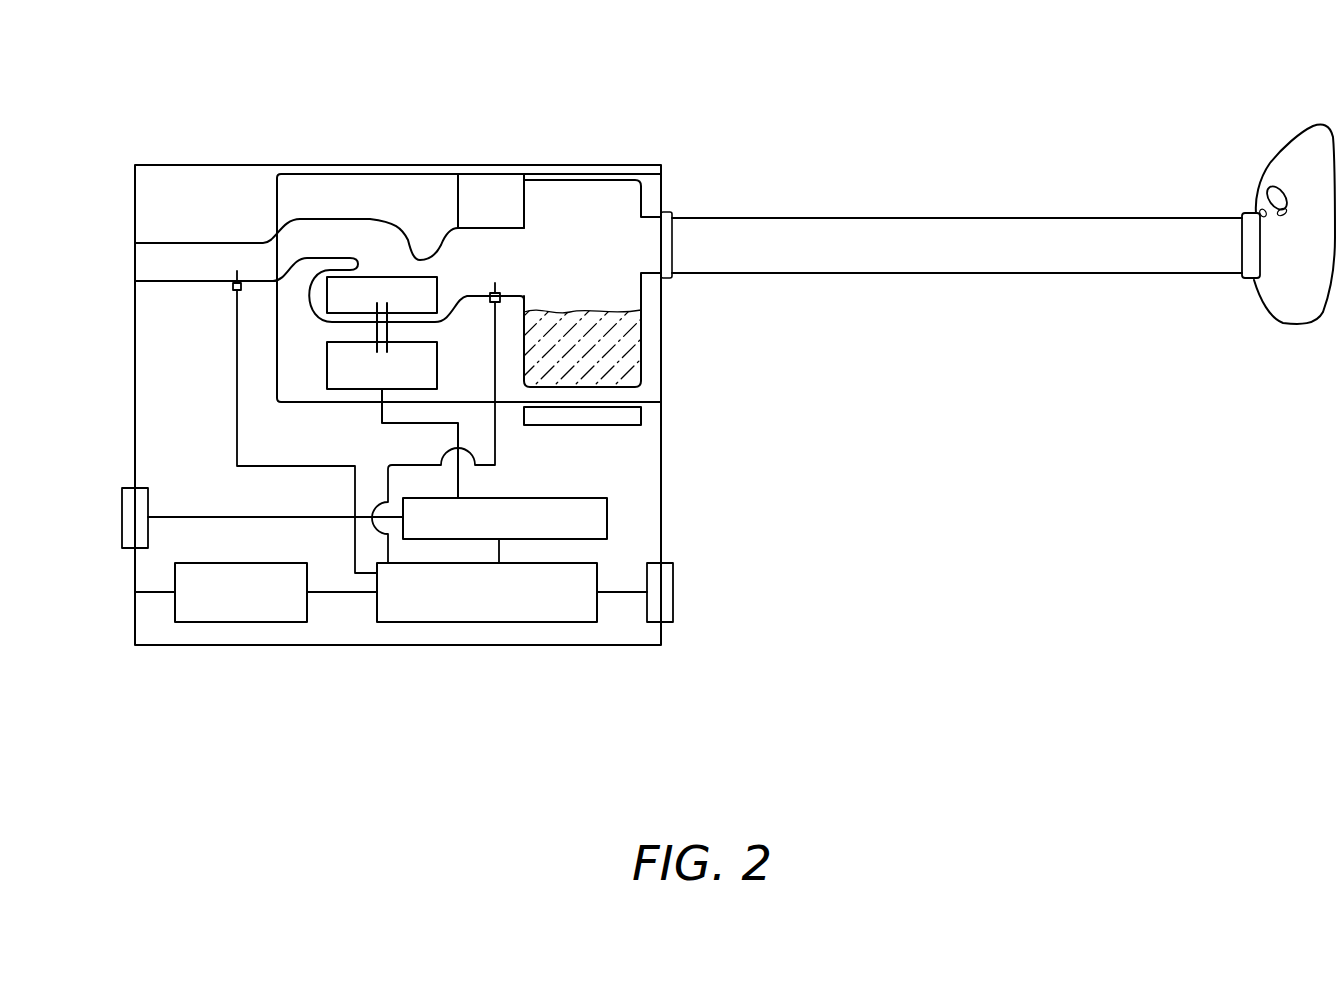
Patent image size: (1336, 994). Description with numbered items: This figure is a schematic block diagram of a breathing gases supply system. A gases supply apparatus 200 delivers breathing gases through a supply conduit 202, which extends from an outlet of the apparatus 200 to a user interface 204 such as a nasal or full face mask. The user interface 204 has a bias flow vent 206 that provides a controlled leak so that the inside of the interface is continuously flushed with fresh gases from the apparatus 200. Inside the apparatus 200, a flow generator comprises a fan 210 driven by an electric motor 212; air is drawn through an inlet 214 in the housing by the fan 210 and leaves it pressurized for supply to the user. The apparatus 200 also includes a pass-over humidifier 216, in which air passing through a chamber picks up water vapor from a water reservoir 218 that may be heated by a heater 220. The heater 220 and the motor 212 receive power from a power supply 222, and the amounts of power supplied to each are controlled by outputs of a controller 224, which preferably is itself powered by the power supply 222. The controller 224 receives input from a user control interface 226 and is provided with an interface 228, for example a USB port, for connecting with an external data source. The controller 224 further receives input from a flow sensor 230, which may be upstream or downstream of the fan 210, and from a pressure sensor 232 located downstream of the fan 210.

The gases supply apparatus 200 is at (656, 148).
The supply conduit 202 is at (956, 274).
The user interface 204 is at (1314, 130).
The bias flow vent 206 is at (1276, 195).
The fan 210 is at (325, 296).
The electric motor 212 is at (366, 380).
The inlet 214 is at (190, 253).
The humidifier 216 is at (612, 268).
The water reservoir 218 is at (622, 349).
The heater 220 is at (641, 414).
The power supply 222 is at (607, 519).
The controller 224 is at (485, 624).
The user control interface 226 is at (250, 625).
The interface 228 is at (673, 590).
The flow sensor 230 is at (237, 317).
The pressure sensor 232 is at (493, 333).